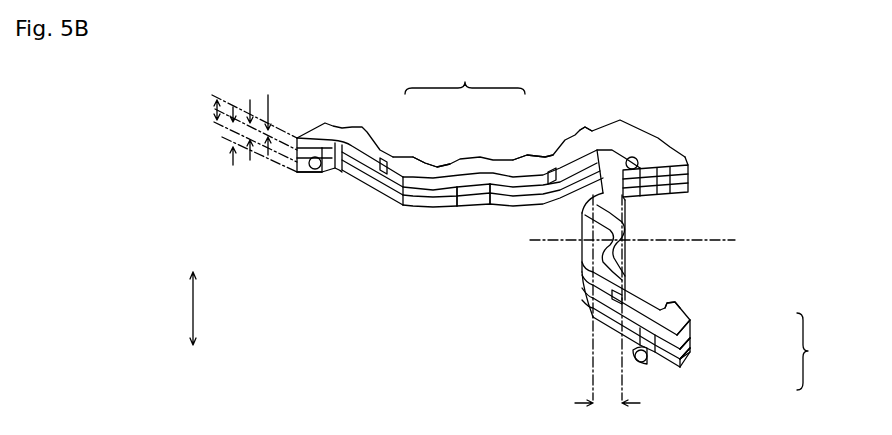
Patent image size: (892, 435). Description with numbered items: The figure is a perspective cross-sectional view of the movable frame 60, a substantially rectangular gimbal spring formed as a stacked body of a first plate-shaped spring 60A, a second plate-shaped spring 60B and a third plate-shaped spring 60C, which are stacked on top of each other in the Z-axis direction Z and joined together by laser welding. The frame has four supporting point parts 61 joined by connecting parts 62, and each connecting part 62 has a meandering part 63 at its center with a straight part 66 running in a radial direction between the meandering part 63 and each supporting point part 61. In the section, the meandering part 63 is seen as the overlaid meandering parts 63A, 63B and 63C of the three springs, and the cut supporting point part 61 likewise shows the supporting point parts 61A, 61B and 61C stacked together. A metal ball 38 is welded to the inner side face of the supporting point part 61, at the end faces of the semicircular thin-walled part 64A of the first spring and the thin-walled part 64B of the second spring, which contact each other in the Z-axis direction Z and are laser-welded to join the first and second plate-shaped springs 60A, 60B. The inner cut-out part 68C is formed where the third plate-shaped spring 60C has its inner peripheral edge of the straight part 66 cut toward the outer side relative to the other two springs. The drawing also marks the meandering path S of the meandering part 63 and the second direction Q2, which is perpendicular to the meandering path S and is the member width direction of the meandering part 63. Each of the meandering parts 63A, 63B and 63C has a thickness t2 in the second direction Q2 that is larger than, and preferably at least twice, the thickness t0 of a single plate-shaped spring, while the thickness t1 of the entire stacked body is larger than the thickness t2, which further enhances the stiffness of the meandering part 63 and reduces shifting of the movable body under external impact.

The supporting point part 61 is at (500, 219).
The connecting part 62 is at (465, 79).
The meandering part 63 is at (475, 157).
The straight part 66 is at (393, 157).
The inner cut-out part 68C is at (615, 135).
The ball 38 is at (638, 158).
The second direction Q2 is at (735, 240).
The meandering path S is at (590, 236).
The meandering part of the third plate-shaped spring 63C is at (580, 262).
The meandering part of the second plate-shaped spring 63B is at (580, 282).
The meandering part of the first plate-shaped spring 63A is at (580, 294).
The thin-walled part 64B is at (680, 315).
The thin-walled part 64A is at (648, 362).
The supporting point part of the third plate-shaped spring 61C is at (677, 340).
The supporting point part of the second plate-shaped spring 61B is at (677, 352).
The supporting point part of the first plate-shaped spring 61A is at (673, 362).
The third plate-shaped spring 60C is at (734, 334).
The second plate-shaped spring 60B is at (734, 351).
The first plate-shaped spring 60A is at (732, 367).
The movable frame 60 is at (823, 351).
The thickness in the first direction t0 is at (250, 100).
The thickness of the entire stacked body t1 is at (244, 116).
The thickness in the second direction t2 is at (607, 404).
The Z-axis direction Z is at (198, 309).